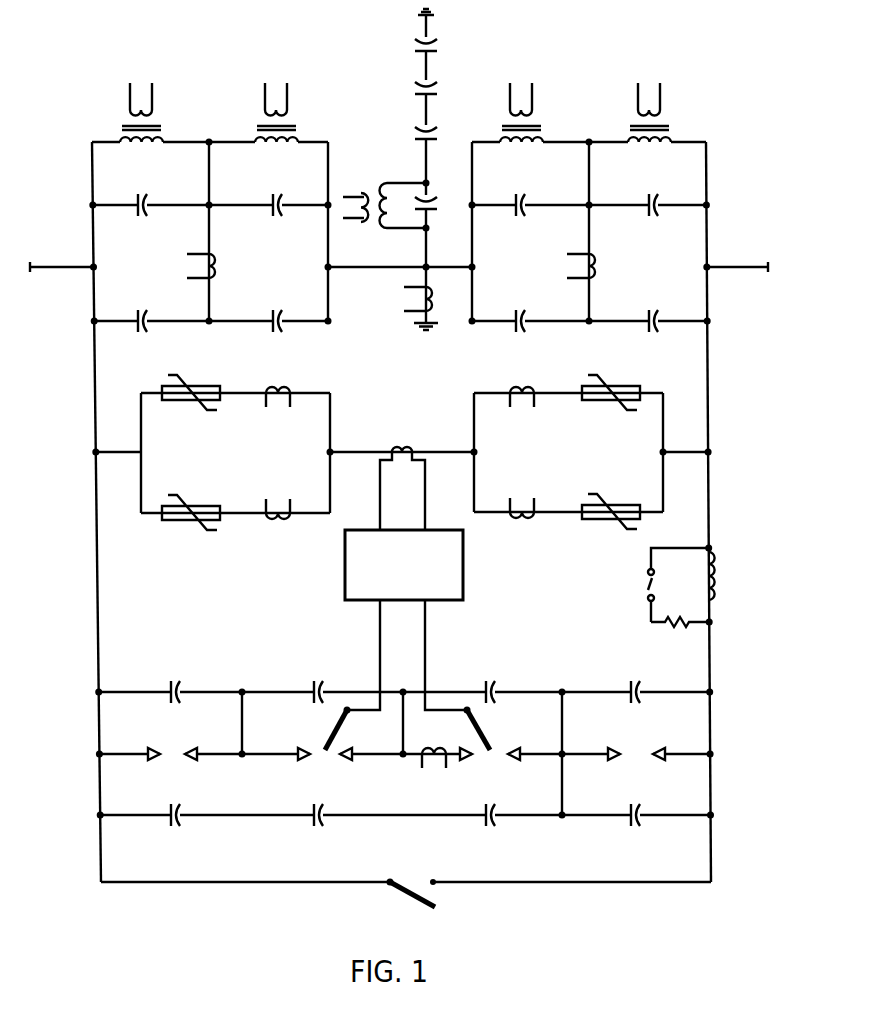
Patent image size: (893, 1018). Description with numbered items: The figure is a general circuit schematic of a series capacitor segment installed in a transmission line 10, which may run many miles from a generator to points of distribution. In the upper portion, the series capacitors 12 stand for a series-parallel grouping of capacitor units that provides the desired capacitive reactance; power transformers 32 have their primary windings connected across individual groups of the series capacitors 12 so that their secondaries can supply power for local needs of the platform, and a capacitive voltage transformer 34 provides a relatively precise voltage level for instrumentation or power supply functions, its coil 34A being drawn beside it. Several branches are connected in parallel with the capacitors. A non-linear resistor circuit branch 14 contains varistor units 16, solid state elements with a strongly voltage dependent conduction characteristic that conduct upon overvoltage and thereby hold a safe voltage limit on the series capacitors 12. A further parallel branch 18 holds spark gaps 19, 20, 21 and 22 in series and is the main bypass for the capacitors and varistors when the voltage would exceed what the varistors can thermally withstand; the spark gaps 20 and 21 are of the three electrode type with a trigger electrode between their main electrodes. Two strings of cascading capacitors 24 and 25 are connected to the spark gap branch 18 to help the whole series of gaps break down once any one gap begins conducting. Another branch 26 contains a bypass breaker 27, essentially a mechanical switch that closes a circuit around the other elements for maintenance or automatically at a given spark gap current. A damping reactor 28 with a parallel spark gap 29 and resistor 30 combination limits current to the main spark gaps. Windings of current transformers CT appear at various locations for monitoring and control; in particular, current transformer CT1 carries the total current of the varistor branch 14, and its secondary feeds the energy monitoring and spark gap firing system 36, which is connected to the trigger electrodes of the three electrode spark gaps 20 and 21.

The transmission line 10 is at (62, 266).
The series capacitors 12 is at (147, 200).
The non-linear resistor circuit branch 14 is at (98, 454).
The varistor units 16 is at (184, 406).
The spark gap circuit branch 18 is at (132, 752).
The spark gap 19 is at (178, 749).
The three electrode spark gap 20 is at (310, 748).
The three electrode spark gap 21 is at (504, 748).
The spark gap 22 is at (648, 751).
The cascading capacitor string 24 is at (148, 689).
The cascading capacitor string 25 is at (148, 812).
The bypass breaker circuit branch 26 is at (152, 878).
The bypass breaker 27 is at (428, 878).
The damping reactor 28 is at (716, 584).
The spark gap 29 is at (648, 588).
The resistor 30 is at (675, 632).
The power transformers 32 is at (118, 124).
The capacitive voltage transformer 34 is at (387, 180).
The current transformer coil 34A is at (360, 224).
The energy monitoring and spark gap firing system 36 is at (364, 528).
The current transformer CT is at (217, 268).
The current transformer CT1 is at (402, 446).